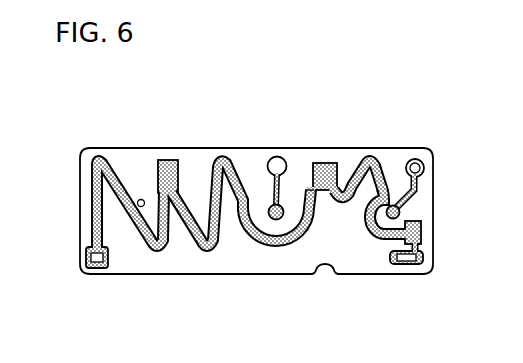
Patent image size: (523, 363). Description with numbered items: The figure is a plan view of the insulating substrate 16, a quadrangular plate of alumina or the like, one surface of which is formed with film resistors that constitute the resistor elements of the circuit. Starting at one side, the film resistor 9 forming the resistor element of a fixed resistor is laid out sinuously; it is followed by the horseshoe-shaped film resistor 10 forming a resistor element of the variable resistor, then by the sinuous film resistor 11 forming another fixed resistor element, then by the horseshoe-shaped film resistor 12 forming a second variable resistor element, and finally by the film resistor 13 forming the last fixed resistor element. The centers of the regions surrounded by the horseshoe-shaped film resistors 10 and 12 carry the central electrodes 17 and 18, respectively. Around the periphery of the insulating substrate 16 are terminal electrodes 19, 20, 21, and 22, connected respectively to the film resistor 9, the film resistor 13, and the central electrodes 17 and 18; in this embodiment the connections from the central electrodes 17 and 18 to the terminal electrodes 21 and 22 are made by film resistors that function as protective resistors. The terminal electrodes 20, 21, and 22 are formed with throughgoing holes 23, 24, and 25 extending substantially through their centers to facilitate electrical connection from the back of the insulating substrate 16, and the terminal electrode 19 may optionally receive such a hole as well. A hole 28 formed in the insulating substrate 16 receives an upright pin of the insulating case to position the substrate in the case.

The insulating substrate 16 is at (80, 181).
The hole 28 is at (141, 198).
The film resistor 9 is at (156, 252).
The central electrode 17 is at (262, 236).
The horseshoe-shaped film resistor 10 is at (275, 222).
The film resistor 11 is at (361, 162).
The horseshoe-shaped film resistor 12 is at (378, 240).
The film resistor 13 is at (421, 237).
The central electrode 18 is at (403, 212).
The terminal electrode 19 is at (94, 270).
The terminal electrode 20 is at (422, 262).
The terminal electrode 21 is at (276, 156).
The terminal electrode 22 is at (414, 160).
The throughgoing hole 23 is at (403, 267).
The throughgoing hole 24 is at (287, 162).
The throughgoing hole 25 is at (426, 164).